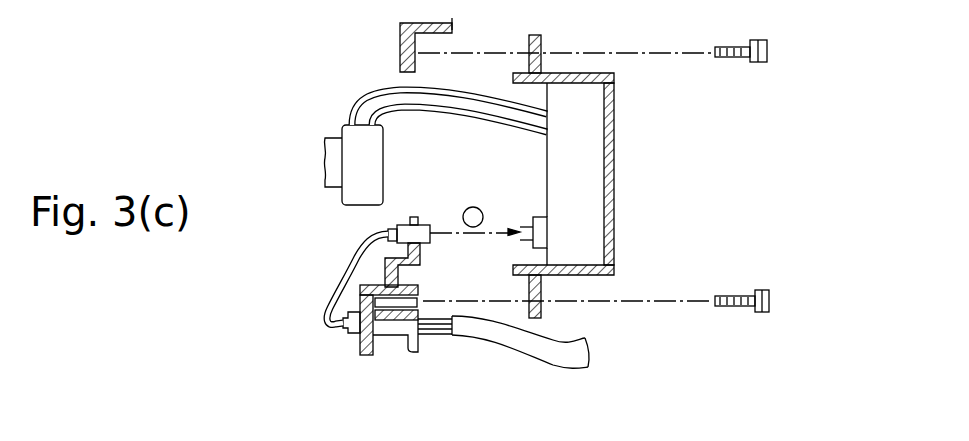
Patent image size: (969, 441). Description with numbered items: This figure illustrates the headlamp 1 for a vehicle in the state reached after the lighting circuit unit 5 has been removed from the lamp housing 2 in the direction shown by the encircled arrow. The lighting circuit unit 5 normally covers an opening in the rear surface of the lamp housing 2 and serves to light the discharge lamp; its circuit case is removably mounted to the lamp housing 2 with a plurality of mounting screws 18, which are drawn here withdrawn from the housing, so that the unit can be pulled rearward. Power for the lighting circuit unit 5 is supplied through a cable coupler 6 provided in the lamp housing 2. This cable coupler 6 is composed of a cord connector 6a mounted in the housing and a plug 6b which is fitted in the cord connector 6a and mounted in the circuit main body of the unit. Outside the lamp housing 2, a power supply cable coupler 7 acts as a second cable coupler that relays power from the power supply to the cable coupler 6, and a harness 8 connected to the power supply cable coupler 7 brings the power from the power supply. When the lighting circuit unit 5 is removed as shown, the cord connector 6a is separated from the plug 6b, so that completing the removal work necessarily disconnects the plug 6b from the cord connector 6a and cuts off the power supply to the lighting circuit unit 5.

The headlamp 1 is at (287, 90).
The lamp housing 2 is at (400, 36).
The lighting circuit unit 5 is at (628, 183).
The cable coupler 6 is at (467, 211).
The cord connector 6a is at (422, 219).
The plug 6b is at (537, 217).
The power supply cable coupler 7 is at (437, 348).
The harness 8 is at (553, 341).
The mounting screws 18 is at (768, 51).